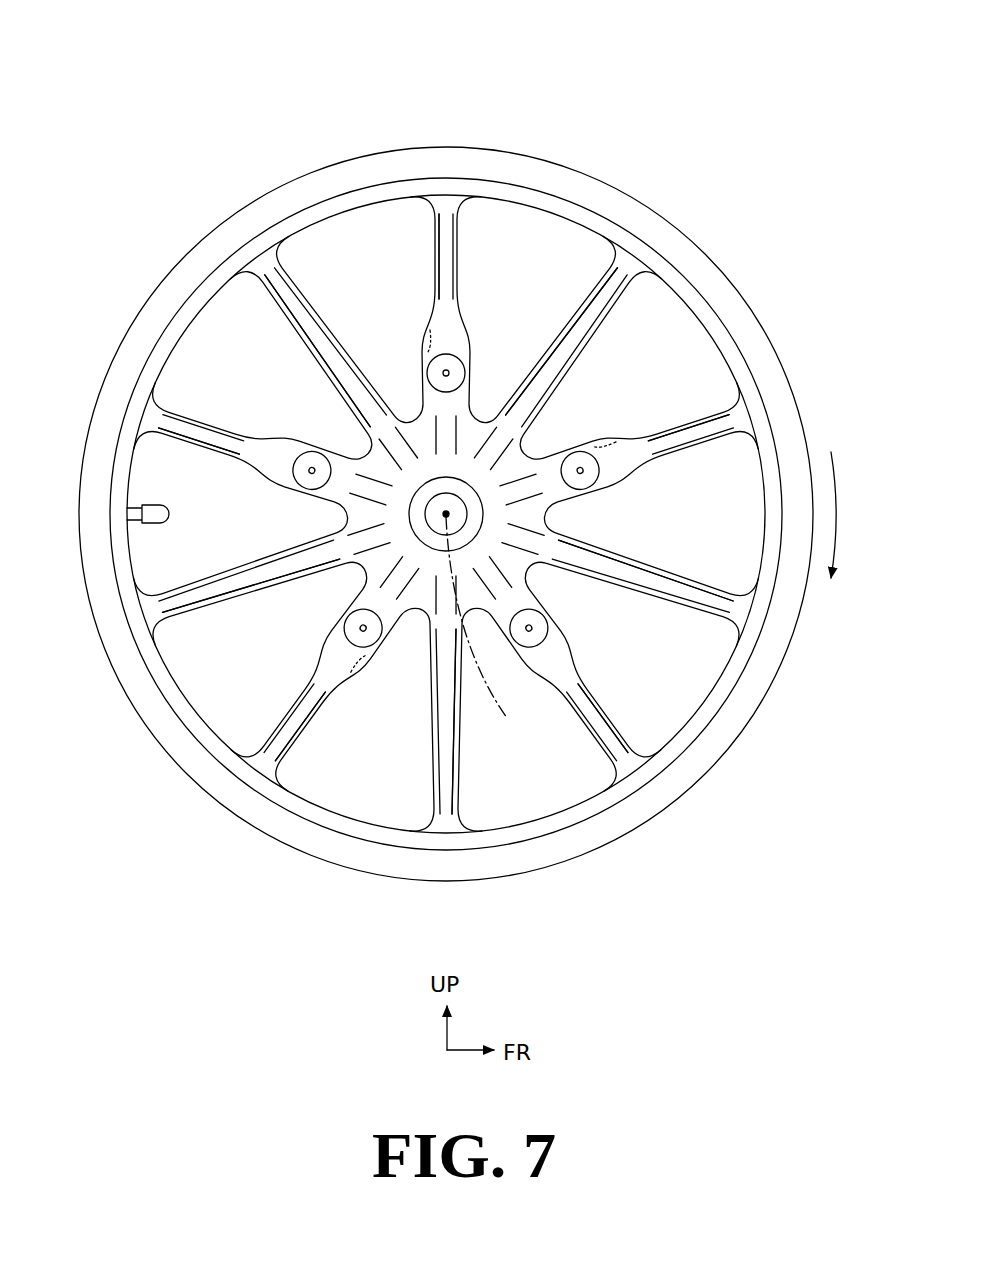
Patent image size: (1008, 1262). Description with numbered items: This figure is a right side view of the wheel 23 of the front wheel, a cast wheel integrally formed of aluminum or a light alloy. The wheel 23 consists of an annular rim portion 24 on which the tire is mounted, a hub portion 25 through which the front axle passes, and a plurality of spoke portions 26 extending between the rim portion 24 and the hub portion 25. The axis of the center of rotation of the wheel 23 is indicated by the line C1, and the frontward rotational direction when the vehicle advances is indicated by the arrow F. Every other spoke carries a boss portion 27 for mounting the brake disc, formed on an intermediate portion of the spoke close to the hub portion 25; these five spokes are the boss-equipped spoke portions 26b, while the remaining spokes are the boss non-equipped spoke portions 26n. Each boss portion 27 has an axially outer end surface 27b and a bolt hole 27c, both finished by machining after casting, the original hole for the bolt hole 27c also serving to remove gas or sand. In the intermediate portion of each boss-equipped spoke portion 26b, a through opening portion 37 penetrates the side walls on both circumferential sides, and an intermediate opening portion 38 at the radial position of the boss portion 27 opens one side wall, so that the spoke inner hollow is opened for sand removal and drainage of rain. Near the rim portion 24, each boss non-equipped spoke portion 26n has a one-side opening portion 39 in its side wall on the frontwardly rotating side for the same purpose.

The wheel 23 is at (457, 466).
The rim portion 24 is at (732, 273).
The hub portion 25 is at (409, 418).
The spoke portions 26 is at (457, 502).
The boss-equipped spoke portion 26b is at (430, 230).
The boss non-equipped spoke portion 26n is at (576, 295).
The boss portion 27 is at (465, 508).
The end surface 27b is at (463, 373).
The bolt hole 27c is at (444, 370).
The through opening portion 37 is at (432, 272).
The intermediate opening portion 38 is at (425, 362).
The one-side opening portion 39 is at (313, 313).
The axis of the center of rotation C1 is at (487, 634).
The frontward rotational direction F is at (845, 515).